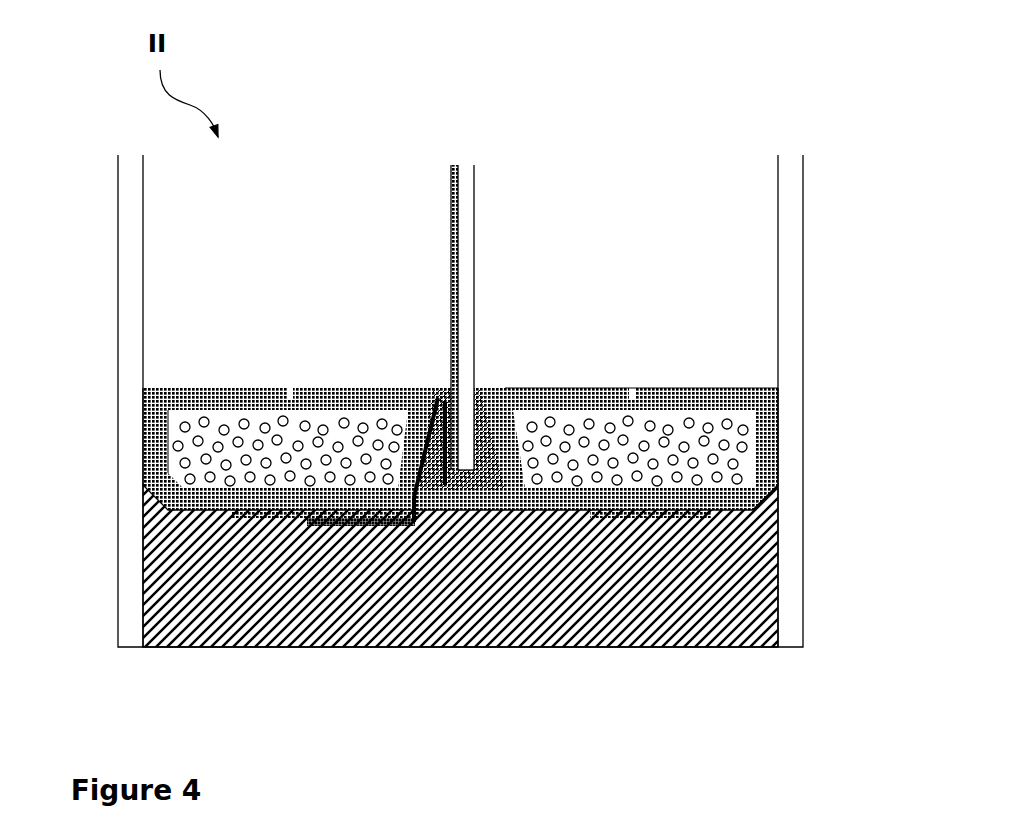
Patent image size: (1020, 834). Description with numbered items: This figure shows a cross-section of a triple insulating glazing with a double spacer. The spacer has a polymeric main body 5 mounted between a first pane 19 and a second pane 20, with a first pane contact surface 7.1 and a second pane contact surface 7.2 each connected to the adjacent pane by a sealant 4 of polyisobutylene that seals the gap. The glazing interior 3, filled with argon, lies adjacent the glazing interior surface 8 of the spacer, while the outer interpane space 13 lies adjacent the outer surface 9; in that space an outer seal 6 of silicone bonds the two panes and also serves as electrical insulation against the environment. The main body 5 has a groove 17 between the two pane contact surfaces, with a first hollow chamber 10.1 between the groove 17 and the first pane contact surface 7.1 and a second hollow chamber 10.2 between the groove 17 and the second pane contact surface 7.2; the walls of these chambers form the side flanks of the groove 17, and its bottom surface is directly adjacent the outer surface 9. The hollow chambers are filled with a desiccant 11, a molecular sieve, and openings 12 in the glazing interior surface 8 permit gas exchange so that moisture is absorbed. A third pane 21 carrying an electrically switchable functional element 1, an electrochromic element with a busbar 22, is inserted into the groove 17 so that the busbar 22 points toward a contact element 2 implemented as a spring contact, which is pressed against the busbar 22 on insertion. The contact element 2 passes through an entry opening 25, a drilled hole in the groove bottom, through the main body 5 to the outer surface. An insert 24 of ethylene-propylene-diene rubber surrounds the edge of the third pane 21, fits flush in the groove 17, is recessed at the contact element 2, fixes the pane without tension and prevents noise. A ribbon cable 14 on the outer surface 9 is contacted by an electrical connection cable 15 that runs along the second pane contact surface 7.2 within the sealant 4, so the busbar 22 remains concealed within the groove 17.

The electrically switchable functional element 1 is at (455, 173).
The contact element 2 is at (437, 392).
The glazing interior 3 is at (232, 273).
The sealant 4 is at (143, 460).
The main body 5 is at (158, 442).
The outer seal 6 is at (732, 623).
The first pane contact surface 7.1 is at (148, 478).
The second pane contact surface 7.2 is at (776, 462).
The glazing interior surface 8 is at (727, 388).
The outer surface 9 is at (580, 513).
The first hollow chamber 10.1 is at (207, 437).
The second hollow chamber 10.2 is at (742, 418).
The desiccant 11 is at (740, 480).
The openings 12 is at (632, 388).
The outer interpane space 13 is at (205, 605).
The ribbon cable 14 is at (265, 517).
The electrical connection cable 15 is at (357, 522).
The groove 17 is at (460, 492).
The first pane 19 is at (133, 637).
The second pane 20 is at (787, 568).
The third pane 21 is at (462, 180).
The busbar 22 is at (458, 395).
The insert 24 is at (490, 395).
The entry opening 25 is at (413, 502).